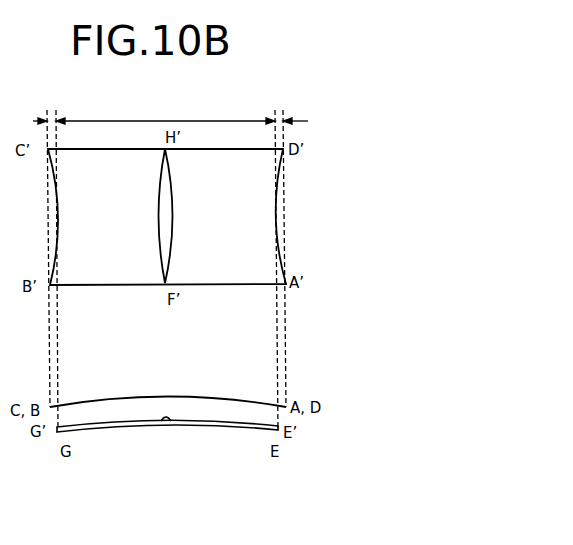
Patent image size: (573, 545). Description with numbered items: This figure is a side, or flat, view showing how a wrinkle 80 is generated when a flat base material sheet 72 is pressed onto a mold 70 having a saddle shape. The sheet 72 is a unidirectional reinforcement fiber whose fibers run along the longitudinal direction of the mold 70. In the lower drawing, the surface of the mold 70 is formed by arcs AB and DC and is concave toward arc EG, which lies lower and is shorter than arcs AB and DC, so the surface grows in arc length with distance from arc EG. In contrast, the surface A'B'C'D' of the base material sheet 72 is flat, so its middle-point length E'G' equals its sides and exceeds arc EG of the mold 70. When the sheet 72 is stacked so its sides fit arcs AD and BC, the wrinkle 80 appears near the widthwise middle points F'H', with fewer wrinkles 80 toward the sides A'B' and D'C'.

The base material sheet 72 is at (100, 286).
The wrinkle 80 is at (172, 258).
The mold 70 is at (132, 432).